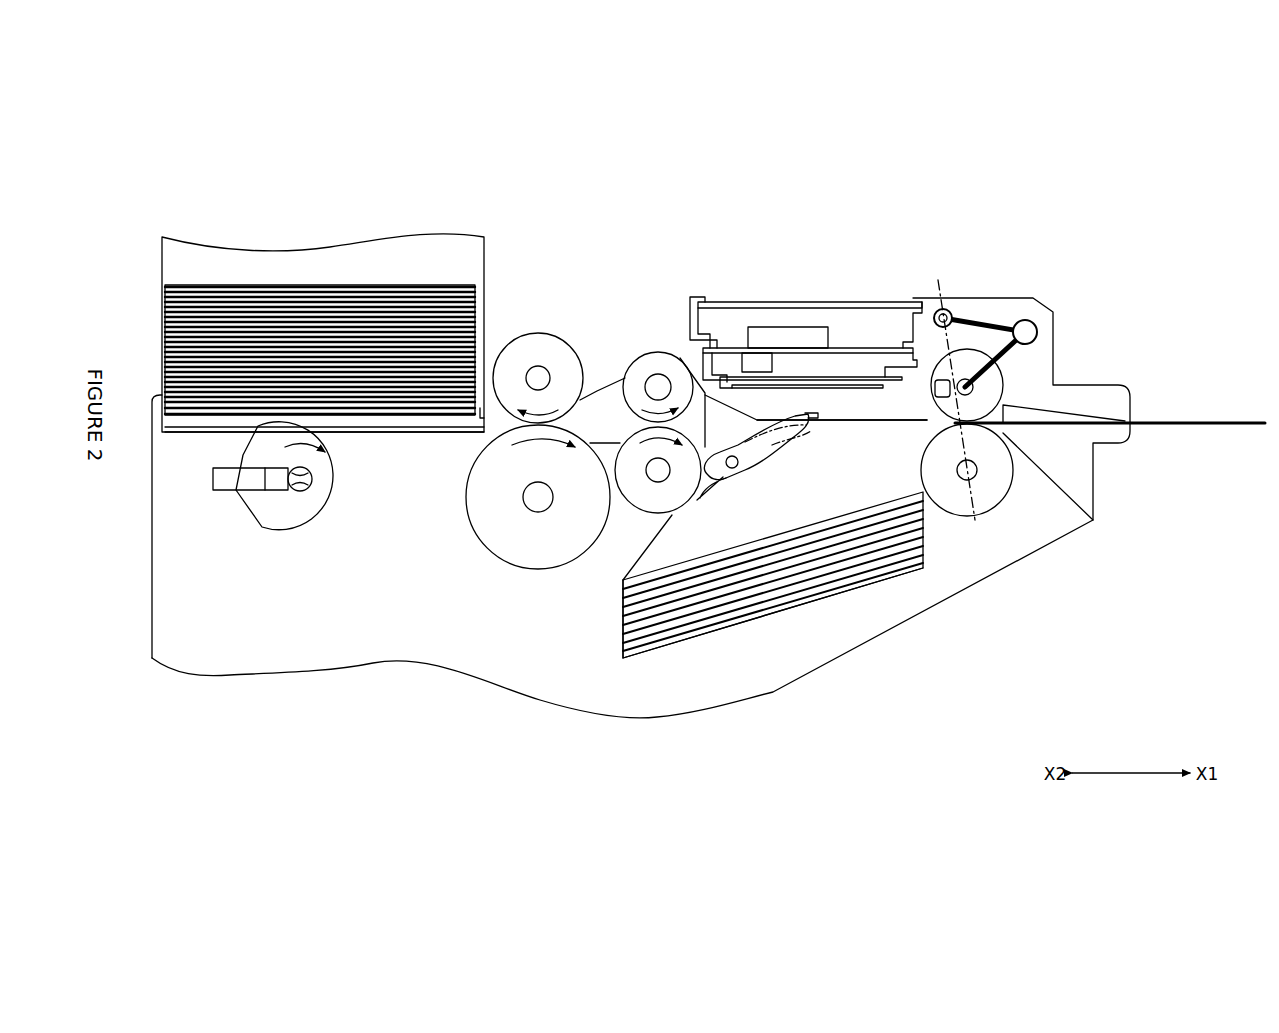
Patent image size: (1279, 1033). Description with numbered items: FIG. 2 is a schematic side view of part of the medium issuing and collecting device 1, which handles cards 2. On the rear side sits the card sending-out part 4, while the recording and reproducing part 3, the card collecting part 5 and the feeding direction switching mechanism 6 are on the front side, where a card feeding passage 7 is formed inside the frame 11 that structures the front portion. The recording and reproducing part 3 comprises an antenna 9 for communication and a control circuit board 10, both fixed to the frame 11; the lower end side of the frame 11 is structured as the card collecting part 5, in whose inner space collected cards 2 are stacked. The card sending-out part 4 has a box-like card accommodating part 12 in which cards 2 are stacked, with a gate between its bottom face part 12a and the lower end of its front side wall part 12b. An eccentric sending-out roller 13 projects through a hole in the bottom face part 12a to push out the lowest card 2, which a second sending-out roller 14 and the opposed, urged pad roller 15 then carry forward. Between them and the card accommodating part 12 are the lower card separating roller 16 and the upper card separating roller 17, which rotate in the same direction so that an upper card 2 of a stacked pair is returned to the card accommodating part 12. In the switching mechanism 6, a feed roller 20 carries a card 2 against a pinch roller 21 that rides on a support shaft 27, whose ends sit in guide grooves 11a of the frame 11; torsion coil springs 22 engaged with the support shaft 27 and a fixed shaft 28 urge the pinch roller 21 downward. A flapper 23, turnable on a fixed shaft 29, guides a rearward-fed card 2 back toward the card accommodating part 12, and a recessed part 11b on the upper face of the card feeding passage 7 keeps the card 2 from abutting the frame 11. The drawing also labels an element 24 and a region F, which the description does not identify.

The medium issuing and collecting device 1 is at (1020, 126).
The card 2 is at (437, 287).
The recording and reproducing part 3 is at (772, 277).
The card sending-out part 4 is at (535, 215).
The card collecting part 5 is at (935, 543).
The feeding direction switching mechanism 6 is at (1070, 335).
The card feeding passage 7 is at (905, 455).
The antenna 9 is at (873, 380).
The control circuit board 10 is at (845, 350).
The frame 11 is at (1040, 298).
The guide groove 11a is at (936, 390).
The recessed part 11b is at (1020, 410).
The card accommodating part 12 is at (372, 333).
The front side wall part 12b is at (485, 272).
The bottom face part 12a is at (396, 434).
The sending-out roller 13 is at (295, 534).
The sending-out roller 14 is at (633, 517).
The pad roller 15 is at (655, 352).
The card separating roller 16 is at (537, 573).
The card separating roller 17 is at (540, 333).
The feed roller 20 is at (1003, 503).
The pinch roller 21 is at (1003, 396).
The torsion coil spring 22 is at (991, 320).
The flapper 23 is at (790, 452).
The roller shaft 24 is at (977, 473).
The support shaft 27 is at (978, 379).
The fixed shaft 28 is at (948, 310).
The fixed shaft 29 is at (733, 468).
The frame F is at (940, 232).